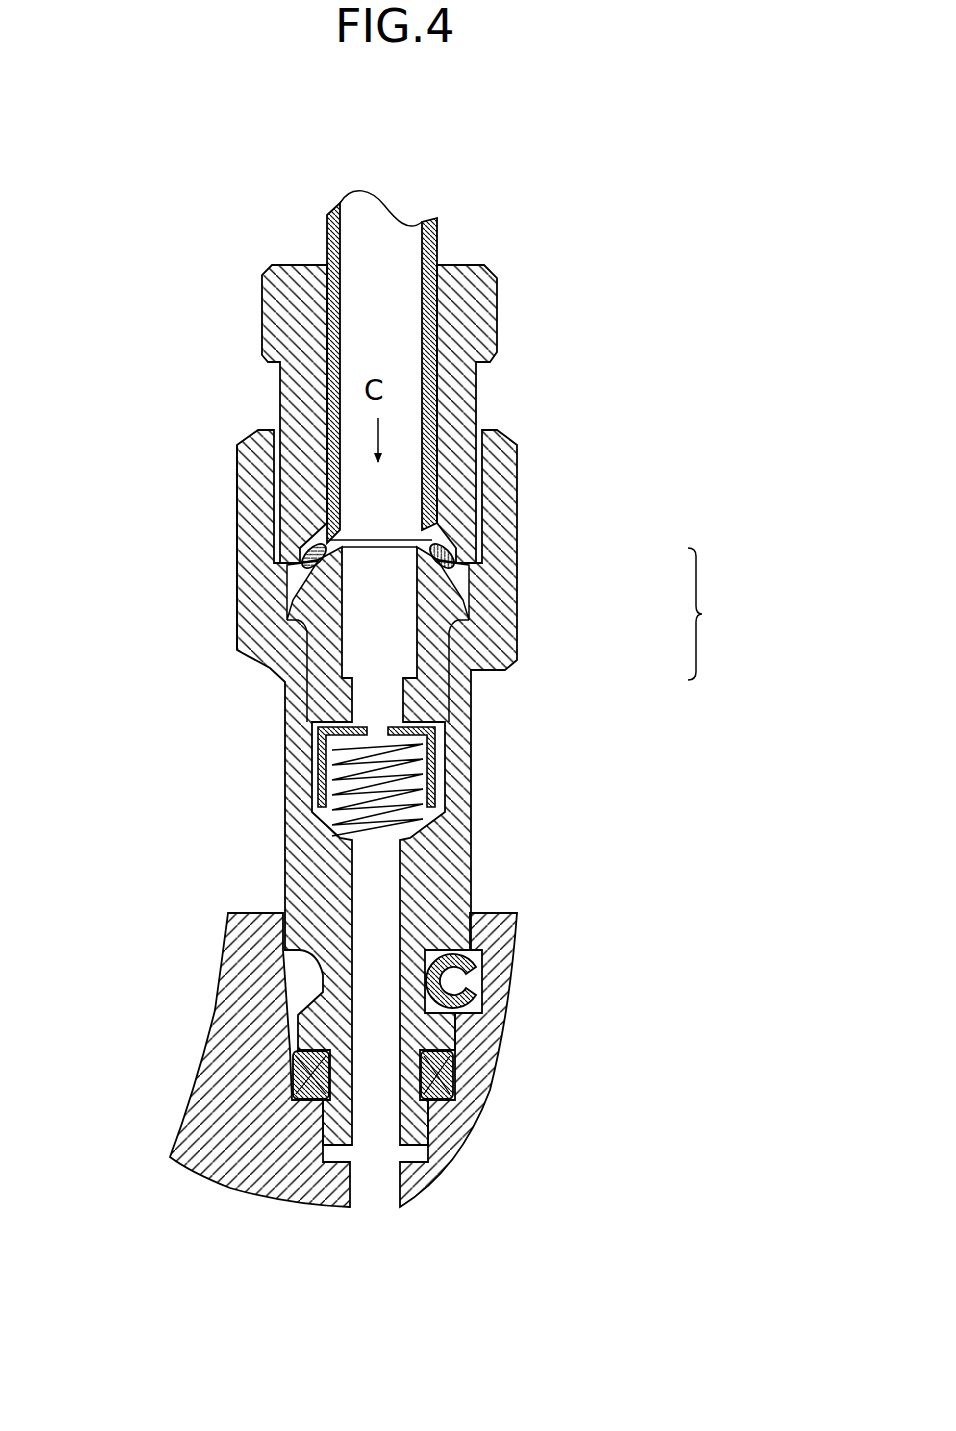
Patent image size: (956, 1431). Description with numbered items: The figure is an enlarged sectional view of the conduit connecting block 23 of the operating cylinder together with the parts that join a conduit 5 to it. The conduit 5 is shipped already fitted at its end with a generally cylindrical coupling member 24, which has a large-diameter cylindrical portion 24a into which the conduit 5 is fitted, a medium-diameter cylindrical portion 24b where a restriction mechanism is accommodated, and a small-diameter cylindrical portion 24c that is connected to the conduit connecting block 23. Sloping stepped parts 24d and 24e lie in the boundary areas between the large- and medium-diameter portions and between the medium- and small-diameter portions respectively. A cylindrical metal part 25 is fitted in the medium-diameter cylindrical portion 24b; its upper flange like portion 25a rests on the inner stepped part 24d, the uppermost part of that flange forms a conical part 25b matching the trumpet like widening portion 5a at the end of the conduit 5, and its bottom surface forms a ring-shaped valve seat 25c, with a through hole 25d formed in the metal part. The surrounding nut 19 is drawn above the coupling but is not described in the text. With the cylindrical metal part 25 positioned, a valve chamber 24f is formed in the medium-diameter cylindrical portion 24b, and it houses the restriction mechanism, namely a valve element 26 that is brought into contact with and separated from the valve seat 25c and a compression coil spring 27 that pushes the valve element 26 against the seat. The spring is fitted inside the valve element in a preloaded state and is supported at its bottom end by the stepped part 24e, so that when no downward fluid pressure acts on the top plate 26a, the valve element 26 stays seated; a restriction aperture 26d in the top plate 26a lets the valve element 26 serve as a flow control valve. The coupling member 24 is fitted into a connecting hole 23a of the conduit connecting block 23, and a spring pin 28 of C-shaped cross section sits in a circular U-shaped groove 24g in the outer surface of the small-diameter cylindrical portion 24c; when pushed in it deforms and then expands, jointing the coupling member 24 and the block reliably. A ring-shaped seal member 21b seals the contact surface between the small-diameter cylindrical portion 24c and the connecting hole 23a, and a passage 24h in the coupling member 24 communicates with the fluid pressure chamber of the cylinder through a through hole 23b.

The conduit 5 is at (440, 232).
The trumpet like widening portion 5a is at (460, 530).
The nut 19 is at (500, 302).
The ring-shaped seal member 21b is at (300, 1075).
The conduit connecting block 23 is at (517, 930).
The connecting hole 23a is at (338, 1122).
The through hole 23b is at (362, 1208).
The coupling member 24 is at (160, 460).
The large-diameter cylindrical portion 24a is at (237, 498).
The medium-diameter cylindrical portion 24b is at (314, 727).
The small-diameter cylindrical portion 24c is at (290, 1020).
The sloping stepped part 24d is at (286, 636).
The sloping stepped part 24e is at (314, 848).
The valve chamber 24f is at (314, 802).
The U-shaped groove 24g is at (316, 977).
The passage 24h is at (384, 888).
The cylindrical metal part 25 is at (714, 614).
The flange like portion 25a is at (468, 600).
The conical part 25b is at (470, 568).
The ring-shaped valve seat 25c is at (478, 678).
The through hole 25d is at (455, 645).
The valve element 26 is at (438, 773).
The top plate 26a is at (316, 777).
The restriction aperture 26d is at (385, 747).
The compression coil spring 27 is at (420, 810).
The spring pin 28 is at (485, 978).